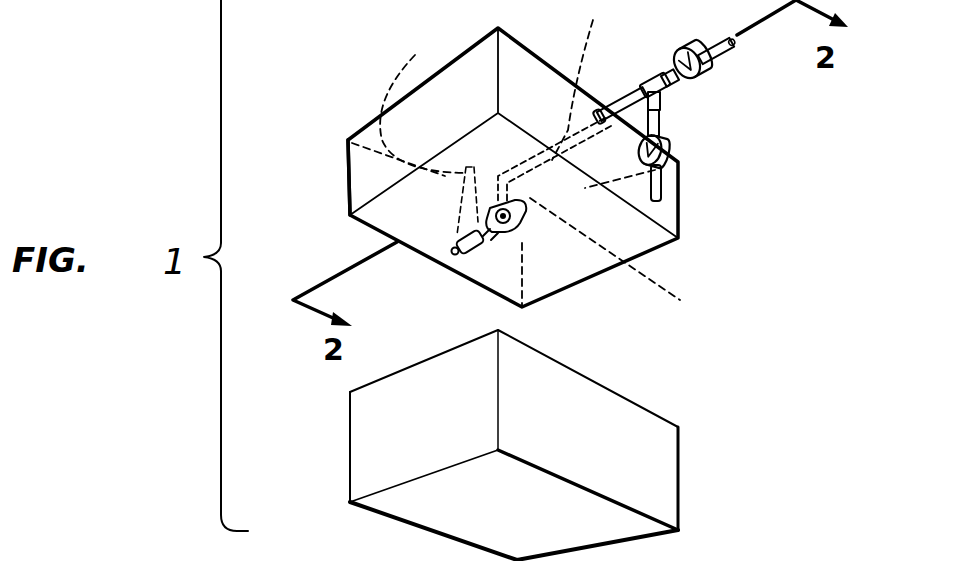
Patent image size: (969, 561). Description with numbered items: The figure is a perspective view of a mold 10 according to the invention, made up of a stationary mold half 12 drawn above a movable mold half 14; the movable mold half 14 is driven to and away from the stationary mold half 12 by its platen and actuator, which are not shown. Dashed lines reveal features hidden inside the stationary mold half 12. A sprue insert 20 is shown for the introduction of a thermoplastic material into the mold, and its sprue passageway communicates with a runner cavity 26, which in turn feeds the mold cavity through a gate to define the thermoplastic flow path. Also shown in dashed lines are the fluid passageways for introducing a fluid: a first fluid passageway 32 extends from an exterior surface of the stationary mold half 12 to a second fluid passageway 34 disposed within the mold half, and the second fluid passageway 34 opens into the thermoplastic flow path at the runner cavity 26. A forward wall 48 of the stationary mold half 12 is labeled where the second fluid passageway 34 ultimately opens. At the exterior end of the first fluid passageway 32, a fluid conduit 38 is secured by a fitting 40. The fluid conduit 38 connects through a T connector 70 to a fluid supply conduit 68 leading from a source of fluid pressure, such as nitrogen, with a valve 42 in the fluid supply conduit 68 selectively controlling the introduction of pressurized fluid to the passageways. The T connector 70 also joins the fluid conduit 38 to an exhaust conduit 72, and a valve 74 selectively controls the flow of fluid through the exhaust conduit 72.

The mold 10 is at (666, 357).
The stationary mold half 12 is at (690, 220).
The movable mold half 14 is at (326, 447).
The sprue insert 20 is at (408, 103).
The runner cavity 26 is at (490, 243).
The first fluid passageway 32 is at (582, 80).
The second fluid passageway 34 is at (613, 246).
The fluid conduit 38 is at (640, 92).
The fitting 40 is at (622, 97).
The valve 42 is at (685, 47).
The forward wall 48 is at (387, 208).
The fluid supply conduit 68 is at (730, 50).
The T connector 70 is at (667, 100).
The exhaust conduit 72 is at (661, 190).
The valve 74 is at (676, 152).